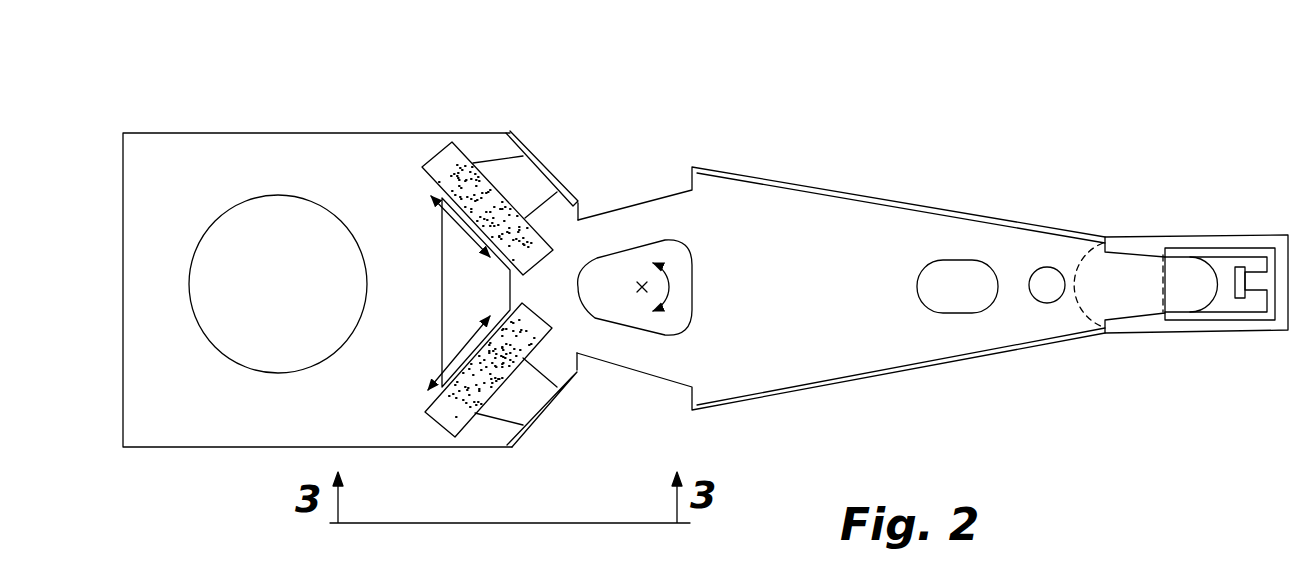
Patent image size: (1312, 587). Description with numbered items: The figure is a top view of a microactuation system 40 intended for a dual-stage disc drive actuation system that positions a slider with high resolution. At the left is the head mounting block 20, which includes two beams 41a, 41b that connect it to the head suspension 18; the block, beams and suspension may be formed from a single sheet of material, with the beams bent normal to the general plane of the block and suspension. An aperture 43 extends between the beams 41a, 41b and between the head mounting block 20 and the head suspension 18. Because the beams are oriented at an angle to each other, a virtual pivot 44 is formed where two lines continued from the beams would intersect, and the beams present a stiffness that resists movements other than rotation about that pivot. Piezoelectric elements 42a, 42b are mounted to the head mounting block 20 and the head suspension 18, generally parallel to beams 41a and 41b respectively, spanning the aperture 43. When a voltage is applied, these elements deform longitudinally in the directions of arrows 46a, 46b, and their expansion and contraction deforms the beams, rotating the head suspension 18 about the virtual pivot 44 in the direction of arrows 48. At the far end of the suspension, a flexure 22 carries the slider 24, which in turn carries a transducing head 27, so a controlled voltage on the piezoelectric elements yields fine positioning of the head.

The head suspension 18 is at (853, 192).
The head mounting block 20 is at (317, 132).
The flexure 22 is at (1140, 236).
The slider 24 is at (1213, 237).
The transducing head 27 is at (1255, 290).
The microactuation system 40 is at (196, 112).
The beam 41a is at (552, 170).
The beam 41b is at (553, 403).
The piezoelectric element 42a is at (500, 131).
The piezoelectric element 42b is at (426, 410).
The aperture 43 is at (510, 405).
The virtual pivot 44 is at (645, 285).
The arrow 46a is at (460, 220).
The arrow 46b is at (475, 325).
The arrows 48 is at (668, 287).